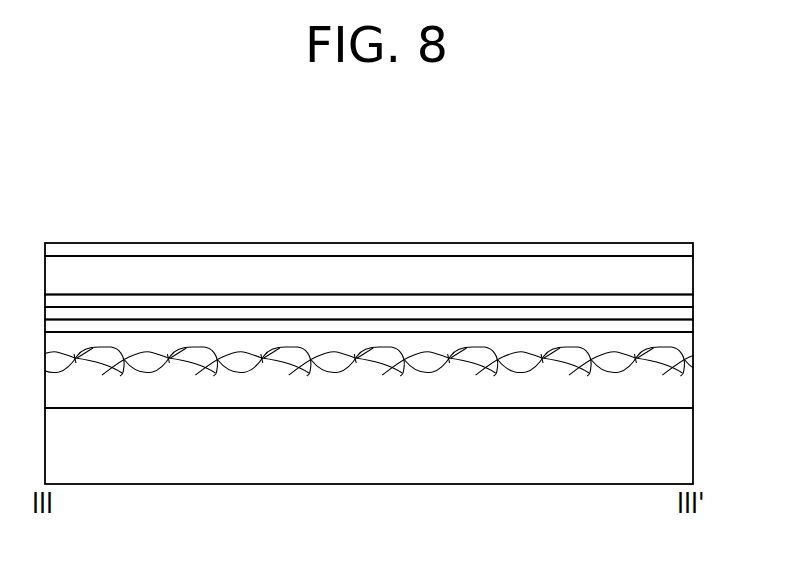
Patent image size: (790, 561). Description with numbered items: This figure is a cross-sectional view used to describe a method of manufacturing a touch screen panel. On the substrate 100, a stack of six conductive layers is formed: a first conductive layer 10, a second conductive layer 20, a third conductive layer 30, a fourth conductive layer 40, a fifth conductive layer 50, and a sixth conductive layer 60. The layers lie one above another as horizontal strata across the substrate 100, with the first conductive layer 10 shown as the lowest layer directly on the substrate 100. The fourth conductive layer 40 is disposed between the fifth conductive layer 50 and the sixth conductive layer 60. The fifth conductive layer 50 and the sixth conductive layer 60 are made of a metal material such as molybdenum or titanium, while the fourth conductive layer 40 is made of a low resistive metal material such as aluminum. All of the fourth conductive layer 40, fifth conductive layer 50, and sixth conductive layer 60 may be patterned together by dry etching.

The substrate 100 is at (367, 462).
The first conductive layer 10 is at (458, 387).
The second conductive layer 20 is at (277, 327).
The third conductive layer 30 is at (347, 313).
The fifth conductive layer 50 is at (417, 302).
The fourth conductive layer 40 is at (482, 275).
The sixth conductive layer 60 is at (568, 247).